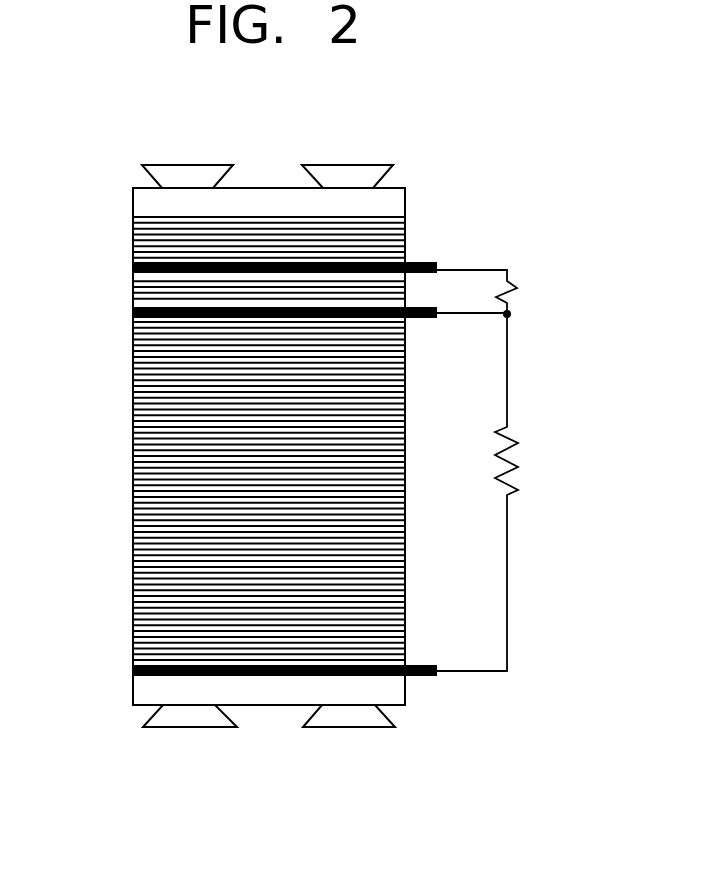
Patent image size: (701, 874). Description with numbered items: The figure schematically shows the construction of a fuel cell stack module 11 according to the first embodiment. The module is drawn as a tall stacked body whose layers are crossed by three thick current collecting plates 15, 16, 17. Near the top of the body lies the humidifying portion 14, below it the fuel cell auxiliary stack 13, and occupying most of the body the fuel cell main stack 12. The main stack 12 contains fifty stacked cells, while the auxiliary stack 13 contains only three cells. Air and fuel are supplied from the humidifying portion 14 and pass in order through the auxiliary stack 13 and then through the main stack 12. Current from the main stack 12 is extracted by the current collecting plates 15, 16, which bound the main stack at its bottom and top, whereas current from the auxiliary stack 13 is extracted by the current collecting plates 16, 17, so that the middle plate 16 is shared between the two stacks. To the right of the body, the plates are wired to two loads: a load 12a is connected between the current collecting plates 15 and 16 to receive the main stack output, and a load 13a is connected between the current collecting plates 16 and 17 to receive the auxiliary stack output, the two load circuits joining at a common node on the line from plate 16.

The fuel cell stack module 11 is at (437, 168).
The fuel cell main stack 12 is at (150, 408).
The load 12a is at (520, 460).
The fuel cell auxiliary stack 13 is at (133, 290).
The load 13a is at (519, 290).
The humidifying portion 14 is at (150, 240).
The current collecting plate 15 is at (430, 663).
The current collecting plate 16 is at (425, 320).
The current collecting plate 17 is at (425, 262).